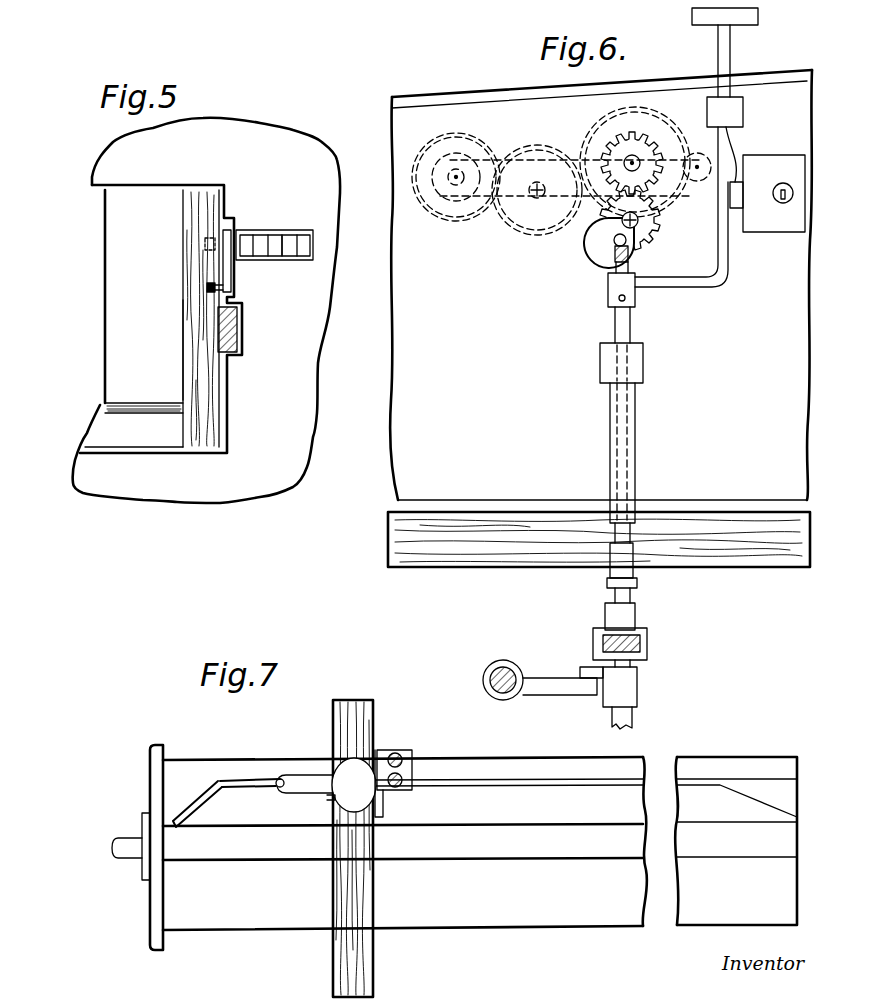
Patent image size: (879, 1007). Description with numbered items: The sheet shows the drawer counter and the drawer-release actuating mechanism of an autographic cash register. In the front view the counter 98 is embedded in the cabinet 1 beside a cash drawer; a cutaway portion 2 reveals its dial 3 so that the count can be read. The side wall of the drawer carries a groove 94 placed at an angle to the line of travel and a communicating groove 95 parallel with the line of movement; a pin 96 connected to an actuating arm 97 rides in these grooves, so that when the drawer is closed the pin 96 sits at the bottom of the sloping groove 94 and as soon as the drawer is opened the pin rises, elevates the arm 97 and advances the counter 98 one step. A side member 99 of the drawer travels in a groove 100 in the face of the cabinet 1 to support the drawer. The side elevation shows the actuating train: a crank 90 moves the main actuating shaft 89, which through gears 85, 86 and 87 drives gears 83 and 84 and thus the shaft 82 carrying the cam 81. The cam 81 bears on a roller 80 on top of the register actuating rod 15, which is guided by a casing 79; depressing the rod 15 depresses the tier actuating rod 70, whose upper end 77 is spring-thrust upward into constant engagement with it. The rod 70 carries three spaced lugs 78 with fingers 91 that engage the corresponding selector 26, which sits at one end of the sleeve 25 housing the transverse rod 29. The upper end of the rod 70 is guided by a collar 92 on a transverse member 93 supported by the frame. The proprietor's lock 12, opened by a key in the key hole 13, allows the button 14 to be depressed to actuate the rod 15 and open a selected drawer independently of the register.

In FIG. 5, the cabinet 1 is at (278, 397).
In FIG. 6, the cabinet 1 is at (480, 553).
In FIG. 7, the cabinet 1 is at (373, 710).
In FIG. 5, the cutaway portion 2 is at (260, 228).
In FIG. 7, the cutaway portion 2 is at (335, 763).
In FIG. 5, the dial 3 is at (278, 243).
In FIG. 7, the dial 3 is at (333, 798).
In FIG. 6, the lock 12 is at (738, 190).
In FIG. 6, the key hole 13 is at (782, 200).
In FIG. 6, the button 14 is at (731, 60).
In FIG. 6, the main actuating rod 15 is at (625, 323).
In FIG. 6, the sleeve 25 is at (516, 646).
In FIG. 6, the selector 26 is at (540, 695).
In FIG. 6, the rod 29 is at (495, 698).
In FIG. 6, the actuating rod 70 is at (633, 718).
In FIG. 6, the upper end 77 is at (610, 568).
In FIG. 6, the spaced lugs 78 is at (627, 687).
In FIG. 6, the casing 79 is at (637, 420).
In FIG. 6, the roller 80 is at (615, 255).
In FIG. 6, the cam 81 is at (658, 235).
In FIG. 6, the shaft 82 is at (614, 241).
In FIG. 6, the gear 83 is at (607, 224).
In FIG. 6, the gear 84 is at (640, 143).
In FIG. 6, the gear 85 is at (604, 127).
In FIG. 6, the gear 86 is at (530, 143).
In FIG. 6, the gear 87 is at (467, 143).
In FIG. 6, the main actuating shaft 89 is at (455, 187).
In FIG. 6, the crank 90 is at (473, 206).
In FIG. 6, the fingers 91 is at (588, 670).
In FIG. 6, the collar 92 is at (627, 617).
In FIG. 6, the transverse member 93 is at (648, 645).
In FIG. 5, the groove 94 is at (208, 285).
In FIG. 7, the groove 94 is at (203, 790).
In FIG. 5, the groove 95 is at (212, 245).
In FIG. 7, the groove 95 is at (243, 782).
In FIG. 5, the pin 96 is at (208, 291).
In FIG. 7, the pin 96 is at (283, 781).
In FIG. 5, the actuating arm 97 is at (231, 278).
In FIG. 7, the actuating arm 97 is at (317, 793).
In FIG. 7, the counter 98 is at (353, 773).
In FIG. 5, the side member 99 is at (238, 326).
In FIG. 5, the groove 100 is at (243, 356).